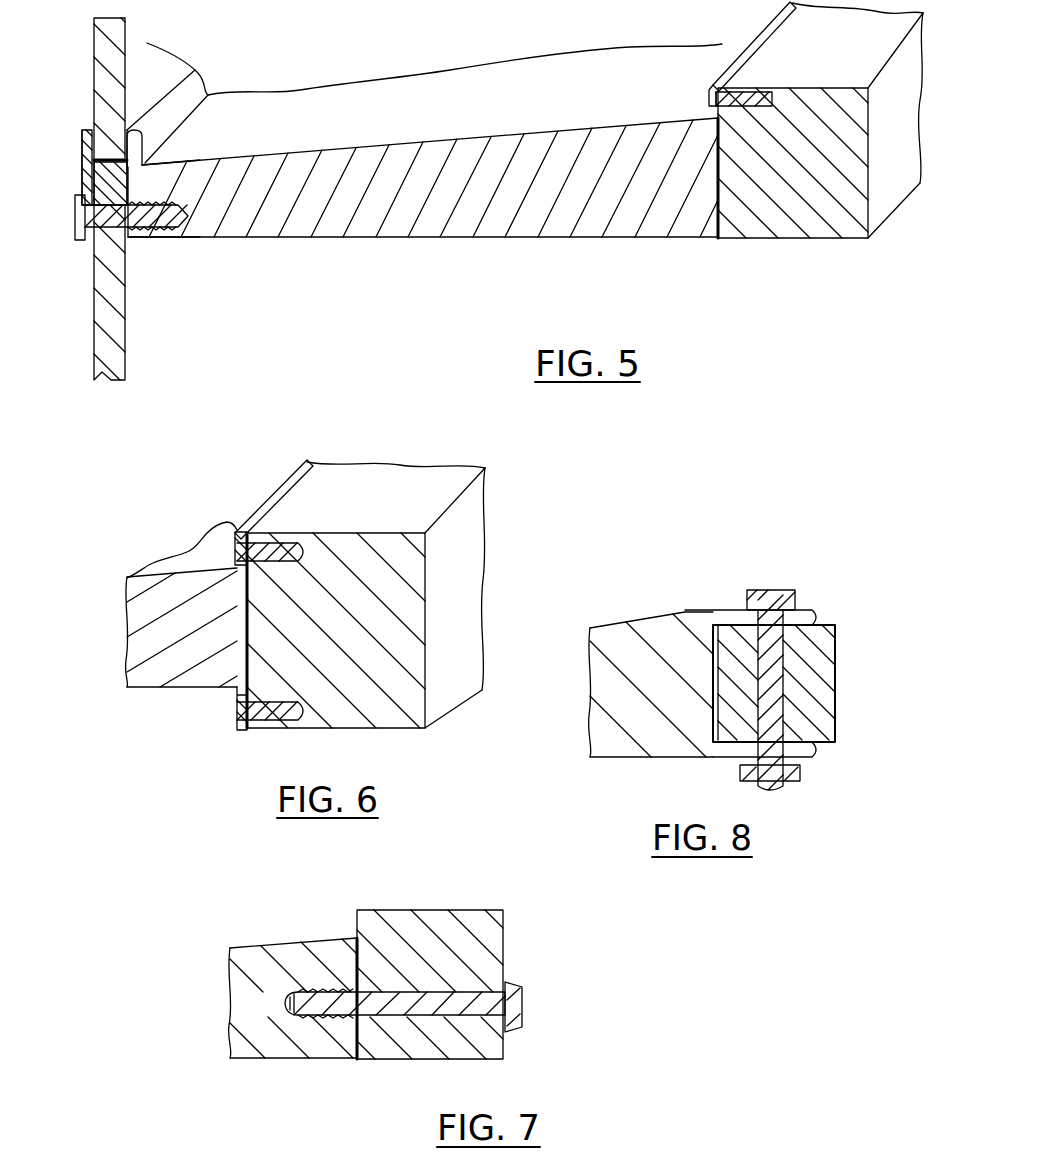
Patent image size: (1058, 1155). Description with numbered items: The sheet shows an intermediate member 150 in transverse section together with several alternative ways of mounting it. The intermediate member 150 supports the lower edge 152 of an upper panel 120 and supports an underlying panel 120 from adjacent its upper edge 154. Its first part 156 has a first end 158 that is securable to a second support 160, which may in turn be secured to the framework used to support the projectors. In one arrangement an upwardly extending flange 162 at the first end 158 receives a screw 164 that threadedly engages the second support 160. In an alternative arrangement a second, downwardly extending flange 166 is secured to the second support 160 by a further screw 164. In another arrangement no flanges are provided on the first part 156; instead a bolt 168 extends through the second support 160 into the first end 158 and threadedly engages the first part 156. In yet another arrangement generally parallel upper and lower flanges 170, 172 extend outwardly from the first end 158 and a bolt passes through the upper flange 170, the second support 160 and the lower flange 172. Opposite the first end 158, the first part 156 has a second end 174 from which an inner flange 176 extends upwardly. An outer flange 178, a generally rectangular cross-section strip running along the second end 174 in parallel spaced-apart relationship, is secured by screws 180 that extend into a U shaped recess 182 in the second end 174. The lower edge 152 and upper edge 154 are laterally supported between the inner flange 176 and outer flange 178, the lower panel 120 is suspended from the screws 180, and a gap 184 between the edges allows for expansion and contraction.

In FIG. 5, the panel 120 is at (147, 45).
In FIG. 5, the intermediate member 150 is at (480, 258).
In FIG. 5, the lower edge 152 is at (106, 172).
In FIG. 5, the upper edge 154 is at (106, 188).
In FIG. 5, the first part 156 is at (542, 77).
In FIG. 6, the first part 156 is at (188, 557).
In FIG. 7, the first part 156 is at (298, 1060).
In FIG. 5, the first end 158 is at (735, 205).
In FIG. 6, the first end 158 is at (249, 646).
In FIG. 7, the first end 158 is at (378, 1060).
In FIG. 5, the second support 160 is at (898, 183).
In FIG. 6, the second support 160 is at (462, 578).
In FIG. 7, the second support 160 is at (470, 910).
In FIG. 5, the upwardly extending flange 162 is at (728, 70).
In FIG. 6, the upwardly extending flange 162 is at (272, 492).
In FIG. 5, the screw 164 is at (770, 88).
In FIG. 6, the screw 164 is at (282, 545).
In FIG. 6, the downwardly extending flange 166 is at (243, 733).
In FIG. 7, the bolt 168 is at (524, 1005).
In FIG. 8, the upper flange 170 is at (822, 612).
In FIG. 8, the lower flange 172 is at (822, 747).
In FIG. 5, the second end 174 is at (165, 164).
In FIG. 5, the inner flange 176 is at (200, 76).
In FIG. 5, the outer flange 178 is at (84, 157).
In FIG. 5, the screws 180 is at (75, 215).
In FIG. 5, the U shaped recess 182 is at (198, 238).
In FIG. 5, the gap 184 is at (165, 141).